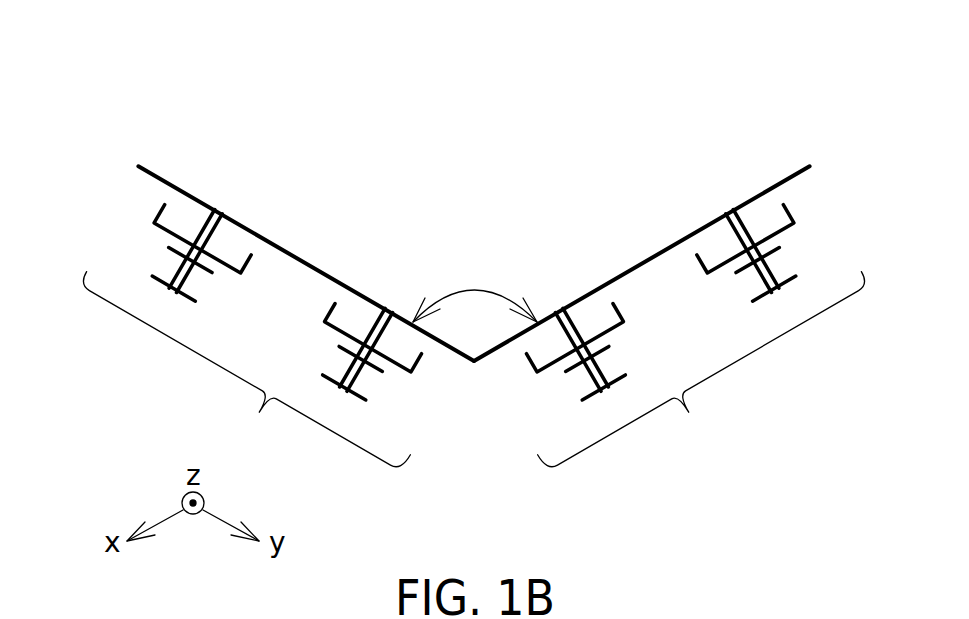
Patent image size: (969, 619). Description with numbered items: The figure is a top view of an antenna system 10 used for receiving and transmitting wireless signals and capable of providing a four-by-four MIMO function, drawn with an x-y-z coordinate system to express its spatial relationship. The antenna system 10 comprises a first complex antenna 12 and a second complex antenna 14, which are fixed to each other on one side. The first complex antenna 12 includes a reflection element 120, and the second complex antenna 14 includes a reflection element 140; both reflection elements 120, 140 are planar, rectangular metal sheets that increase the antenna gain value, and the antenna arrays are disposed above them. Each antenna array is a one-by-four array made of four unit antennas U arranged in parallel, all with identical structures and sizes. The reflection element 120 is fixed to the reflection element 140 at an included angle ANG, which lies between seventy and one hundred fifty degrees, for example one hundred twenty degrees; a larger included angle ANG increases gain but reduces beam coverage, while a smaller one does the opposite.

The antenna system 10 is at (760, 75).
The first complex antenna 12 is at (246, 369).
The second complex antenna 14 is at (701, 369).
The reflection element 120 is at (152, 175).
The reflection element 140 is at (796, 175).
The unit antenna U is at (216, 266).
The included angle ANG is at (475, 289).